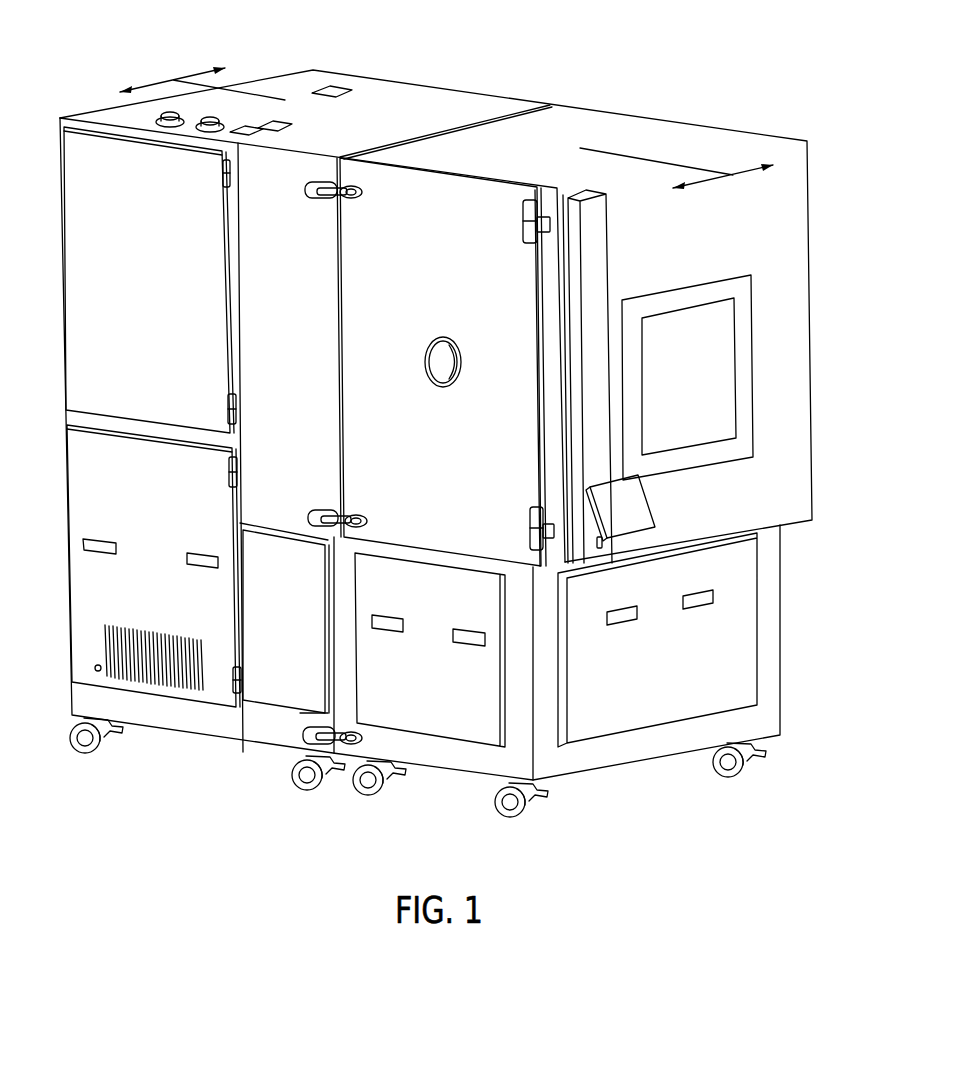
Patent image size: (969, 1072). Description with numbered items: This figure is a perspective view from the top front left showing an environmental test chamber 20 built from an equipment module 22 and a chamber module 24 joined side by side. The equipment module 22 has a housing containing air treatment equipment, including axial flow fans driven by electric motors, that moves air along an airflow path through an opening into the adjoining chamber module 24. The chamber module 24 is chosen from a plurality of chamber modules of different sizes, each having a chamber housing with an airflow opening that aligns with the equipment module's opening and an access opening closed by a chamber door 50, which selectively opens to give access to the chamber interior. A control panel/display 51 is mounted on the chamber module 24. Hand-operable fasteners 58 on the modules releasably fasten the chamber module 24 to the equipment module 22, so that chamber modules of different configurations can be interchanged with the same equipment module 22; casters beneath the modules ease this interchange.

The environmental test chamber 20 is at (577, 59).
The equipment module 22 is at (402, 93).
The chamber module 24 is at (682, 137).
The chamber door 50 is at (783, 232).
The control panel/display 51 is at (640, 500).
The fasteners 58 is at (313, 198).